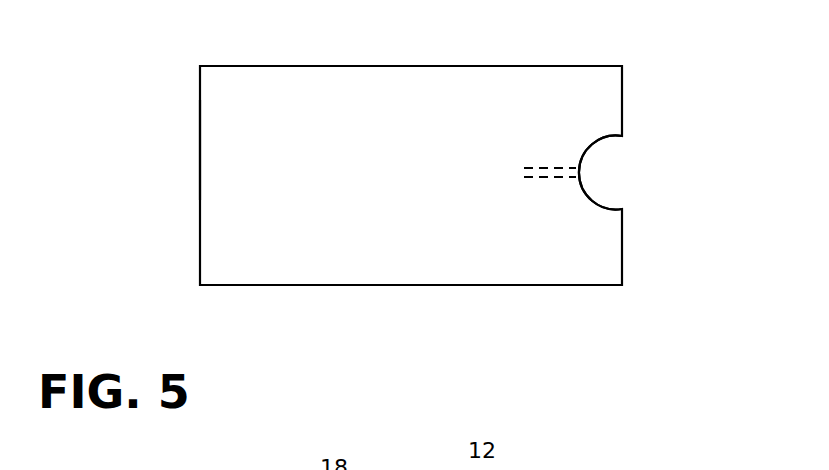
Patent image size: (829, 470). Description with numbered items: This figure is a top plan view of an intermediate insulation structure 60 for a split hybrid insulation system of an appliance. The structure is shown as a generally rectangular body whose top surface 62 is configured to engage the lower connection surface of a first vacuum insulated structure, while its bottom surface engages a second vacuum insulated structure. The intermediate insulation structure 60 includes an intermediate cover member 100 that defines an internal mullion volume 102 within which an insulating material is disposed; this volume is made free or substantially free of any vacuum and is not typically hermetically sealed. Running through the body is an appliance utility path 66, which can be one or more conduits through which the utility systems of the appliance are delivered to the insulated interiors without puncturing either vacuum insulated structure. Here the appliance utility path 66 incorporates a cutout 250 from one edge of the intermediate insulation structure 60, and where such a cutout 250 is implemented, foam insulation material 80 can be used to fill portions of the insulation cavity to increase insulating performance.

The intermediate insulation structure 60 is at (313, 60).
The intermediate cover member 100 is at (414, 98).
The cutout 250 is at (586, 172).
The appliance utility path 66 is at (510, 156).
The insulation material 80 is at (240, 132).
The top surface 62 is at (349, 160).
The internal mullion volume 102 is at (470, 255).